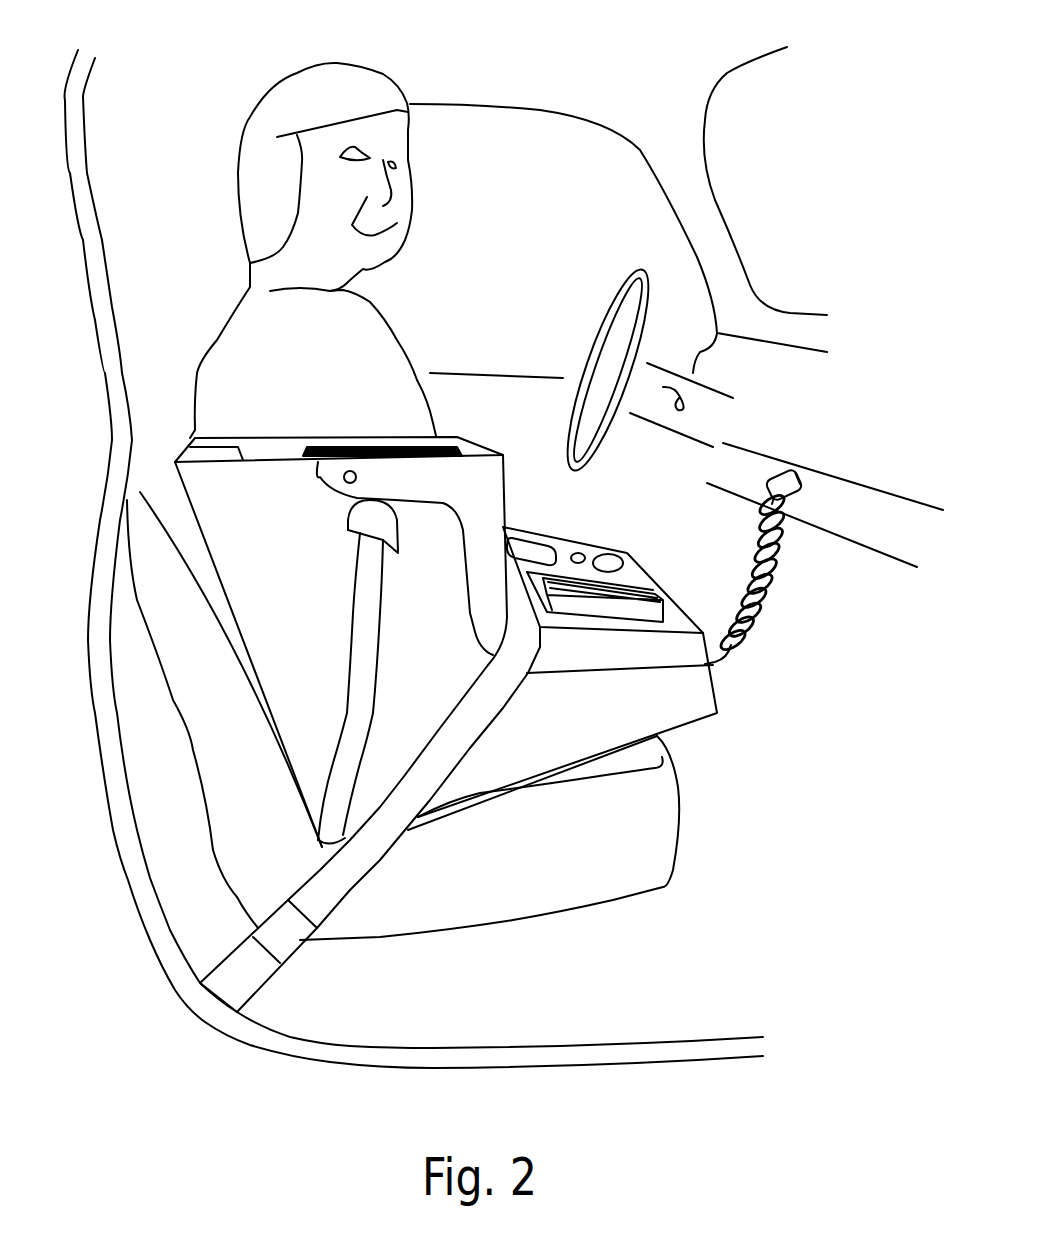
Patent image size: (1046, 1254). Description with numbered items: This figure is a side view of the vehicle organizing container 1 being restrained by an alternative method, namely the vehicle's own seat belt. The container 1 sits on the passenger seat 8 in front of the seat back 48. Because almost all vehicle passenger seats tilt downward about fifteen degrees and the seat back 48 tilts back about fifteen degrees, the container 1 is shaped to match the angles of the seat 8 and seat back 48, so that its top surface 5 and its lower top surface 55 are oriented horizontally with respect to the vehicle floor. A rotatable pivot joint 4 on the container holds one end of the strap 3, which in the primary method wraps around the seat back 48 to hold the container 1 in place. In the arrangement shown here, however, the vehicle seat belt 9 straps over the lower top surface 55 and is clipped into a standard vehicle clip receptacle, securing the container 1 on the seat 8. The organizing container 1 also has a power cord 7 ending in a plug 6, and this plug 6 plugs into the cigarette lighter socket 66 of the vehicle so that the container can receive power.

The vehicle organizing container 1 is at (307, 753).
The strap 3 is at (367, 618).
The rotatable pivot joint 4 is at (358, 515).
The top surface 5 is at (347, 437).
The plug 6 is at (790, 492).
The cigarette lighter socket 66 is at (798, 476).
The power cord 7 is at (765, 605).
The passenger seat 8 is at (495, 908).
The vehicle seat belt 9 is at (453, 740).
The seat back 48 is at (195, 732).
The lower top surface 55 is at (640, 572).